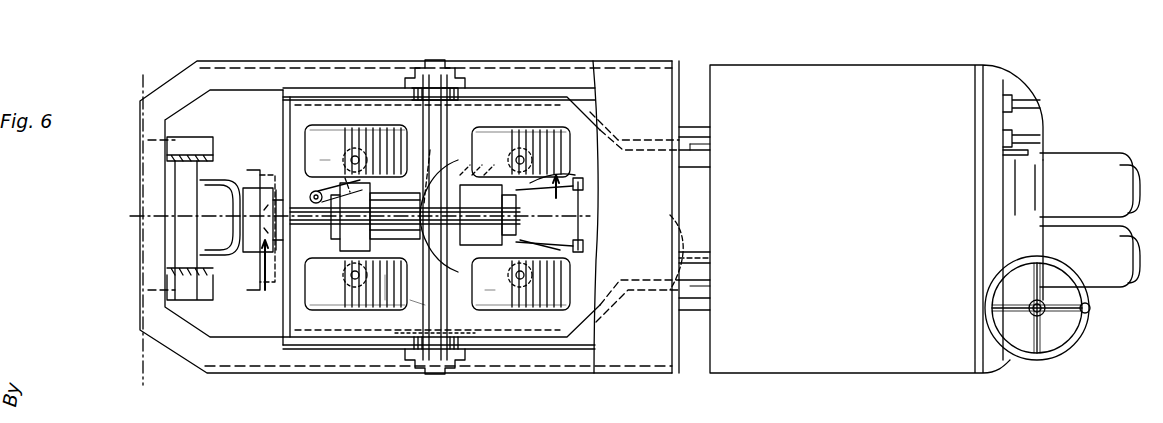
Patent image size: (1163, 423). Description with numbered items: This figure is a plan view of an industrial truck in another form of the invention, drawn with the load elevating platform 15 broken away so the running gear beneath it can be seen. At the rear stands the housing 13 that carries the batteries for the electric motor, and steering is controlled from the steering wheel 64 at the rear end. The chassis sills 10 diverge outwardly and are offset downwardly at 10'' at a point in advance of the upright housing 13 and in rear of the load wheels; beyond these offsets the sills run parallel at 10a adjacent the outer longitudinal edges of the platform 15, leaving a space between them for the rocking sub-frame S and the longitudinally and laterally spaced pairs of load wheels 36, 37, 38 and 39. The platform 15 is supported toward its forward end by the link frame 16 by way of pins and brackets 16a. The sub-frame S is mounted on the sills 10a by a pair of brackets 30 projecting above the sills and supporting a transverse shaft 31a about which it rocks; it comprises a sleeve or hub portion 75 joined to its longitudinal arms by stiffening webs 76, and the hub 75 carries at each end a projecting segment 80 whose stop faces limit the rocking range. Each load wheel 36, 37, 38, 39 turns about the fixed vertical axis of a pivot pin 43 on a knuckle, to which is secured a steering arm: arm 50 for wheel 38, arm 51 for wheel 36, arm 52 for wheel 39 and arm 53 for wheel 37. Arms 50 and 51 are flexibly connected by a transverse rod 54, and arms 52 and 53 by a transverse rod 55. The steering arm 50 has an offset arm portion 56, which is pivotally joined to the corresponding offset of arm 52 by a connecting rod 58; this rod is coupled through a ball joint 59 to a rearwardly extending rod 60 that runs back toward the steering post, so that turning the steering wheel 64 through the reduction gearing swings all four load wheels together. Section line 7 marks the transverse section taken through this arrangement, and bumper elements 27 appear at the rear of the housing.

The section line 7- 7 is at (410, 242).
The sills 10 is at (718, 218).
The parallel sill portions 10a is at (378, 95).
The offset portions 10'' is at (636, 211).
The housing 13 is at (855, 80).
The load elevating platform 15 is at (301, 70).
The link frame 16 is at (245, 262).
The pins and brackets 16a is at (178, 220).
The bumper 27 is at (1095, 162).
The brackets 30 is at (438, 66).
The transverse shaft 31a is at (440, 345).
The load carrying wheel 36 is at (335, 300).
The load carrying wheel 37 is at (520, 300).
The load carrying wheel 38 is at (325, 135).
The load carrying wheel 39 is at (500, 145).
The pivot pin 43 is at (522, 124).
The steering arm 50 is at (400, 140).
The steering arm 51 is at (390, 301).
The steering arm 52 is at (565, 178).
The steering arm 53 is at (560, 255).
The transverse rod 54 is at (360, 242).
The transverse rod 55 is at (582, 205).
The offset arm portion 56 is at (315, 192).
The connecting rod 58 is at (328, 152).
The ball joint 59 is at (486, 287).
The rearwardly extending rod 60 is at (700, 256).
The steering wheel 64 is at (1090, 328).
The hub portion 75 is at (445, 150).
The stiffening webs 76 is at (440, 216).
The projecting segment 80 is at (460, 100).
The rocking sub-frame S is at (418, 302).